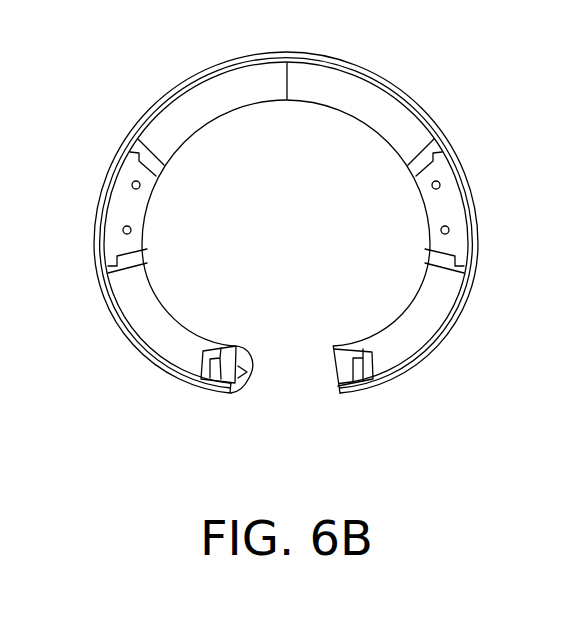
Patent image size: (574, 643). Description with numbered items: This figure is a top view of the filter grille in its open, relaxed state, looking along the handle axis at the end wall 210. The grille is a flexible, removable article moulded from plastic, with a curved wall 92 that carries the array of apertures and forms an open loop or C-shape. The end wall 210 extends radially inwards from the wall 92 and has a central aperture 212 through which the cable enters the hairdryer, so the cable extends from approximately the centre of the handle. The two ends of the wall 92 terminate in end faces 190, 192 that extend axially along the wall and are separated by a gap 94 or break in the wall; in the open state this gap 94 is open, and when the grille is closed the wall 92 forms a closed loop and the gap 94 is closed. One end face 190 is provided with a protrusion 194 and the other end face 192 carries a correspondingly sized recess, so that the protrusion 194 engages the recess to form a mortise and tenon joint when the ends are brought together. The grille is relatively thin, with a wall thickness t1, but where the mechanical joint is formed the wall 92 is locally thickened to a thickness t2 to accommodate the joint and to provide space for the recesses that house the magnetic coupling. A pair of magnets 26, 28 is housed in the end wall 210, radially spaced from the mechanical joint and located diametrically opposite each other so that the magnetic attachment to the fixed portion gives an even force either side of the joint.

The wall 92 is at (214, 65).
The end wall 210 is at (207, 110).
The aperture 212 is at (306, 232).
The magnet 26 is at (125, 203).
The magnet 28 is at (452, 208).
The protrusion 194 is at (248, 352).
The end face 190 is at (240, 392).
The end face 192 is at (340, 390).
The gap 94 is at (342, 421).
The thickness of the filter grille t1 is at (177, 293).
The thickness of the wall t2 is at (203, 390).